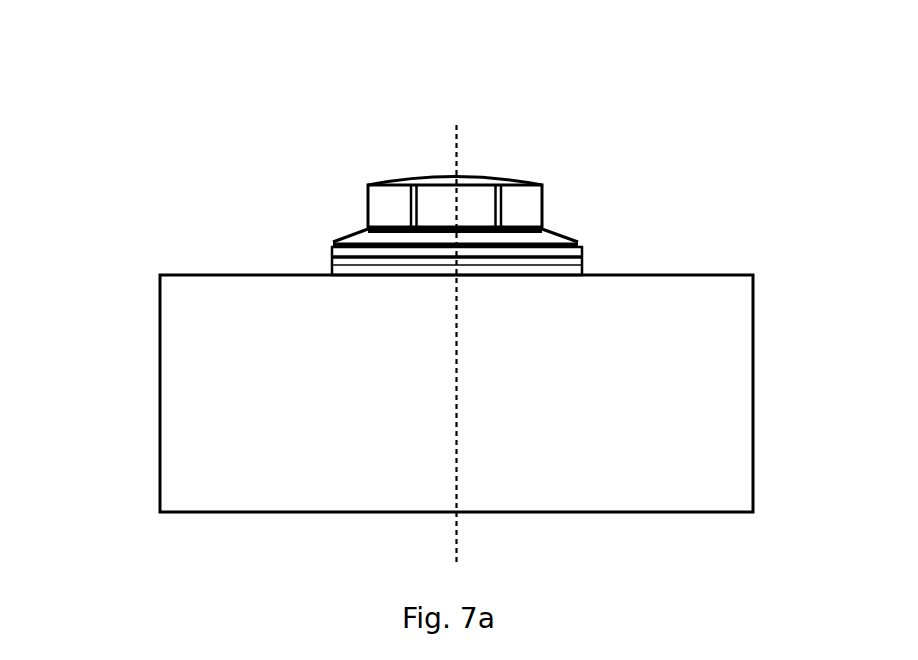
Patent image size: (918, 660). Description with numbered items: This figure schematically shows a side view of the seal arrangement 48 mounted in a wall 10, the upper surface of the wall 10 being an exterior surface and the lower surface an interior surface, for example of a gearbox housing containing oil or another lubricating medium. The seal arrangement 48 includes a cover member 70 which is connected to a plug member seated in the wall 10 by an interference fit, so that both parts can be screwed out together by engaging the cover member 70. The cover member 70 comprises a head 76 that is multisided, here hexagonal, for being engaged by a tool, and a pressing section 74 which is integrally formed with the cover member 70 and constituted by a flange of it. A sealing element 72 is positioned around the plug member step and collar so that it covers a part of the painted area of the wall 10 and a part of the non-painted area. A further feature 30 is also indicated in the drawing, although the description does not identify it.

The workpiece / base plate 10 is at (202, 390).
The central axis 30 is at (457, 155).
The fastening assembly 48 is at (439, 289).
The nut 70 is at (493, 166).
The washer 72 is at (340, 268).
The flange of nut 74 is at (334, 246).
The hexagonal face of nut 76 is at (530, 210).